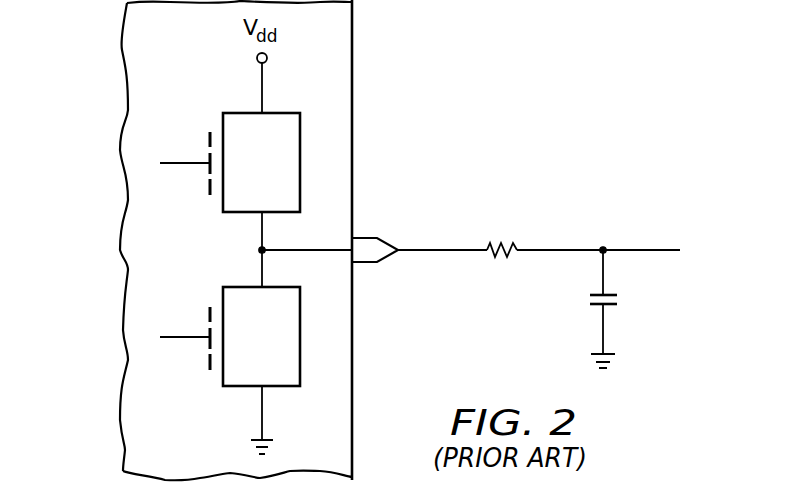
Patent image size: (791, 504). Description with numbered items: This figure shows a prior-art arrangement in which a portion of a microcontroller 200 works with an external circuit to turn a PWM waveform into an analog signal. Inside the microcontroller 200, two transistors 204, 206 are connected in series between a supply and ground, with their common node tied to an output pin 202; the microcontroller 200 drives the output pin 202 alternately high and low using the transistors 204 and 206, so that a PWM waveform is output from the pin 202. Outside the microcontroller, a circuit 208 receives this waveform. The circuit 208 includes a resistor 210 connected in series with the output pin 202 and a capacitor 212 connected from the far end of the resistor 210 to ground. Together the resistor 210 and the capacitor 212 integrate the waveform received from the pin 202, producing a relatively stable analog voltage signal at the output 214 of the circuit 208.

The microcontroller 200 is at (118, 232).
The output pin 202 is at (364, 237).
The transistor 204 is at (285, 178).
The transistor 206 is at (285, 352).
The circuit 208 is at (447, 94).
The resistor 210 is at (505, 243).
The capacitor 212 is at (618, 302).
The output 214 is at (653, 250).